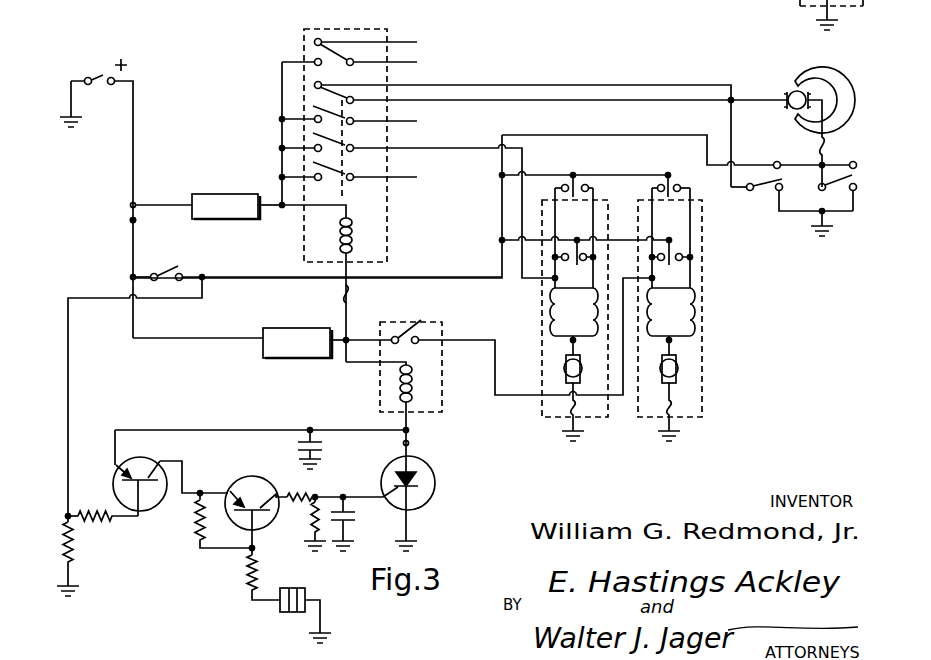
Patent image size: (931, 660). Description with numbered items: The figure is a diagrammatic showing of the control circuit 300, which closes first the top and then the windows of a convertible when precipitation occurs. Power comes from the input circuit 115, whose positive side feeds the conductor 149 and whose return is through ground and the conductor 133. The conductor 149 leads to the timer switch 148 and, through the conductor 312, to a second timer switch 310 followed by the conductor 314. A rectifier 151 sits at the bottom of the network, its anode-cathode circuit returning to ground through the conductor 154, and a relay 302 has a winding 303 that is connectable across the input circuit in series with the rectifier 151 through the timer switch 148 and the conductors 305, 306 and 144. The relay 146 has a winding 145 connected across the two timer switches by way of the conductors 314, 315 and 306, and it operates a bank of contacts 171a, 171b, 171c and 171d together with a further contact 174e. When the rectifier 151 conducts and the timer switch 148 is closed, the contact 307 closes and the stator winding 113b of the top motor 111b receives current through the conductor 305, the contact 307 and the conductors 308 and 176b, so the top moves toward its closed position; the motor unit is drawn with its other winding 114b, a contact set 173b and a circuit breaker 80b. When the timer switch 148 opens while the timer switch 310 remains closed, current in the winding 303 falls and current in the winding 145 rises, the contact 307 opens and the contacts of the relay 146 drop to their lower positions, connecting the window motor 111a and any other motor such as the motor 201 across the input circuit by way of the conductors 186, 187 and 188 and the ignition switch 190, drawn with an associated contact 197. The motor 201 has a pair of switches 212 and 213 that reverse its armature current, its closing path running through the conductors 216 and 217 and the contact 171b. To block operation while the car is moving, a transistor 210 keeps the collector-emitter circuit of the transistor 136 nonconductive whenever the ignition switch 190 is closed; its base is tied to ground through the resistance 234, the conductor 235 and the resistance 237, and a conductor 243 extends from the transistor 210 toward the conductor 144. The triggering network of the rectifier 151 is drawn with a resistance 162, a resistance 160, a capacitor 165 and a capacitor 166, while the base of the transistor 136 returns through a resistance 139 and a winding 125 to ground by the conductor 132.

The control circuit 300 is at (238, 80).
The input circuit 115 is at (99, 72).
The conductor 133 is at (71, 81).
The conductor 149 is at (131, 220).
The conductor 312 is at (166, 211).
The second timer switch 310 is at (220, 198).
The conductor 314 is at (270, 205).
The relay 146 is at (390, 203).
The relay winding 145 is at (352, 250).
The relay contact 174e is at (340, 53).
The relay contact 171d is at (340, 93).
The relay contact 171c is at (340, 112).
The relay contact 171b is at (340, 140).
The relay contact 171a is at (340, 168).
The conductor 216 is at (636, 72).
The conductor 217 is at (648, 100).
The motor 201 is at (848, 80).
The switch 212 is at (850, 176).
The switch 213 is at (764, 192).
The conductor 187 is at (567, 176).
The relay contact 173b is at (650, 218).
The conductor 186 is at (533, 245).
The conductor 176b is at (652, 287).
The stator winding 113b is at (650, 305).
The motor winding 114b is at (693, 323).
The window motor 111a is at (542, 417).
The top motor 111b is at (688, 315).
The circuit breaker 80b is at (644, 398).
The switch 197 is at (142, 274).
The ignition switch 190 is at (172, 265).
The conductor 188 is at (252, 278).
The conductor 235 is at (104, 283).
The timer switch 148 is at (280, 326).
The conductor 305 is at (336, 338).
The conductor 315 is at (346, 298).
The conductor 306 is at (353, 356).
The relay contact 307 is at (423, 325).
The relay 302 is at (445, 322).
The relay winding 303 is at (411, 393).
The conductor 308 is at (494, 358).
The conductor 243 is at (262, 435).
The transistor 210 is at (158, 448).
The resistance 234 is at (103, 500).
The resistance 237 is at (76, 547).
The conductor 144 is at (407, 446).
The transistor 136 is at (257, 480).
The resistor 162 is at (305, 492).
The resistor 160 is at (314, 518).
The capacitor 165 is at (347, 516).
The capacitor 166 is at (318, 446).
The rectifier 151 is at (437, 488).
The conductor 154 is at (412, 526).
The resistor 139 is at (258, 572).
The relay coil 125 is at (280, 606).
The ground connection 132 is at (321, 633).